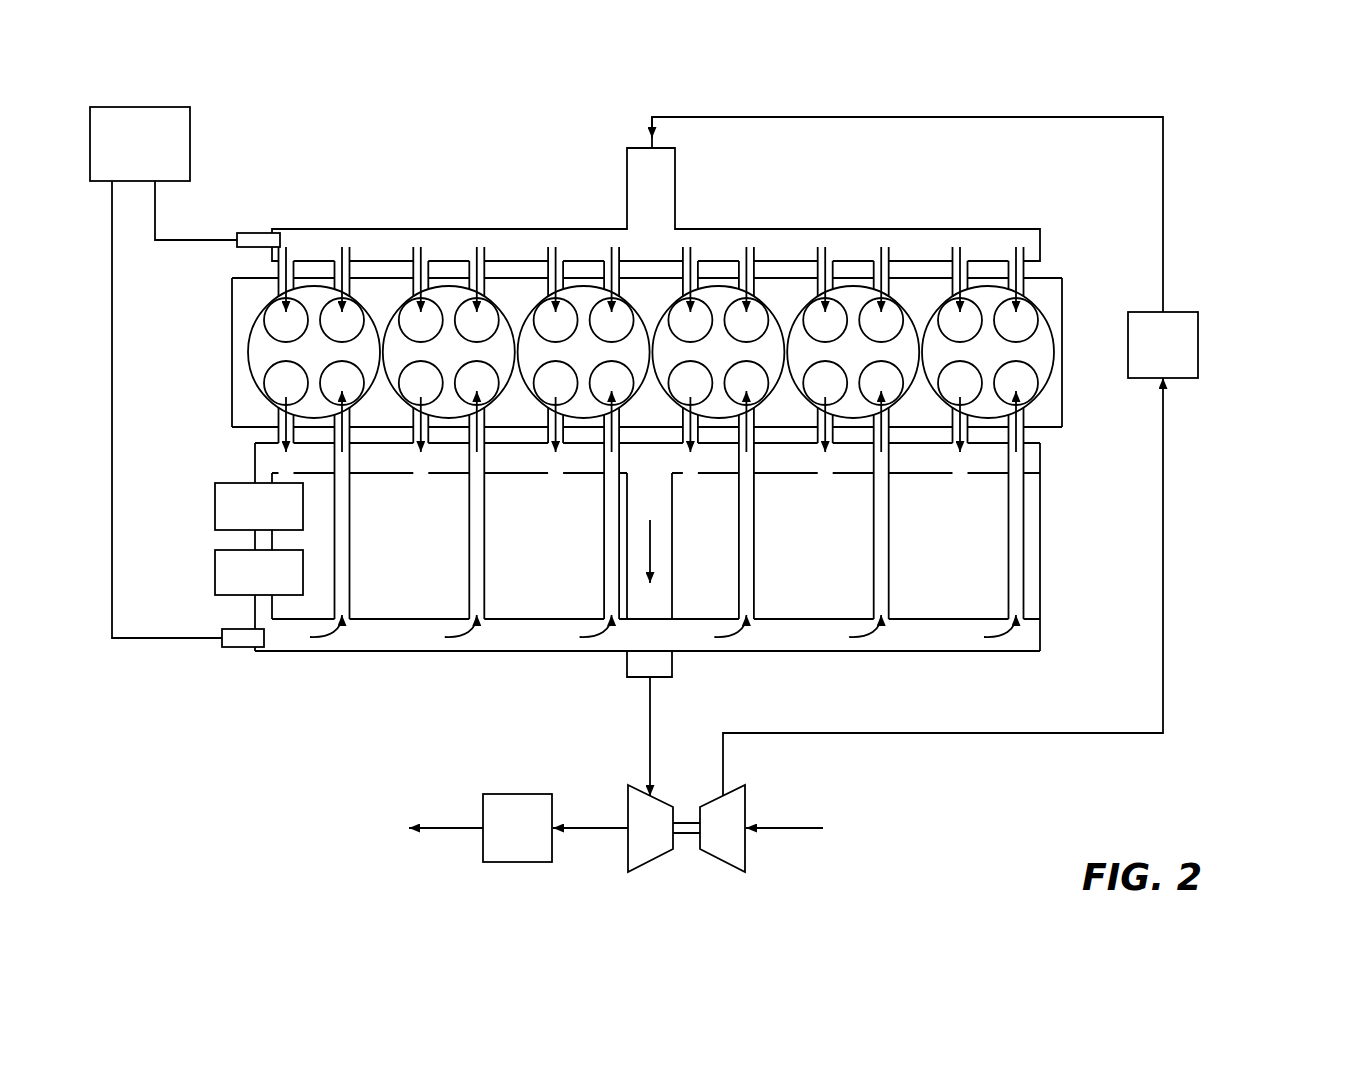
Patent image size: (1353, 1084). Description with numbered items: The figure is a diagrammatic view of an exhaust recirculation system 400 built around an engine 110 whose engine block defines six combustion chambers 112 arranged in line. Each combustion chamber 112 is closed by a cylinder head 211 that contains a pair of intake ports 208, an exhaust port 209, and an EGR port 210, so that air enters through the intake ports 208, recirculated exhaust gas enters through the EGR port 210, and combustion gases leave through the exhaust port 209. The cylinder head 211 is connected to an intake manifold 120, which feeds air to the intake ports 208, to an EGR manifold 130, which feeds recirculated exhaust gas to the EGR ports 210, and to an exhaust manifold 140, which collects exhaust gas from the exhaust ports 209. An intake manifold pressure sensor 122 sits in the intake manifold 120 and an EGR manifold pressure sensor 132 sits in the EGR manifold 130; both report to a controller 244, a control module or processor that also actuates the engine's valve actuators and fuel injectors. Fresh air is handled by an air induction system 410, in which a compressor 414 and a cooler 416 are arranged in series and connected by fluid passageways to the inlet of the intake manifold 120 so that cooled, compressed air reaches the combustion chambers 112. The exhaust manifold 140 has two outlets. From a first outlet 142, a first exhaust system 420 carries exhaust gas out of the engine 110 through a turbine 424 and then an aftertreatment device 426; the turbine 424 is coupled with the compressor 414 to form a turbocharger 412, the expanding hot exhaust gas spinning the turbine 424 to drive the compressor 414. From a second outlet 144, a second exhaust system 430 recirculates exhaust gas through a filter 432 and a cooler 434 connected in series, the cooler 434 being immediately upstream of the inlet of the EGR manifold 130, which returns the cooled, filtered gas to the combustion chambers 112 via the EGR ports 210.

The controller 244 is at (124, 154).
The intake manifold pressure sensor 122 is at (241, 236).
The intake manifold 120 is at (903, 238).
The engine 110 is at (1075, 248).
The cylinder head 211 is at (1050, 300).
The combustion chamber 112 is at (299, 360).
The intake port 208 is at (271, 331).
The exhaust port 209 is at (271, 394).
The EGR port 210 is at (327, 394).
The exhaust manifold 140 is at (781, 466).
The second outlet 144 is at (258, 470).
The filter 432 is at (222, 506).
The cooler 434 is at (222, 573).
The second exhaust system 430 is at (182, 589).
The EGR manifold pressure sensor 132 is at (233, 642).
The EGR manifold 130 is at (808, 626).
The first outlet 142 is at (670, 677).
The cooler 416 is at (1183, 337).
The exhaust recirculation system 400 is at (1284, 177).
The turbocharger 412 is at (738, 835).
The turbine 424 is at (637, 862).
The compressor 414 is at (738, 858).
The aftertreatment device 426 is at (498, 852).
The first exhaust system 420 is at (572, 743).
The air induction system 410 is at (954, 784).